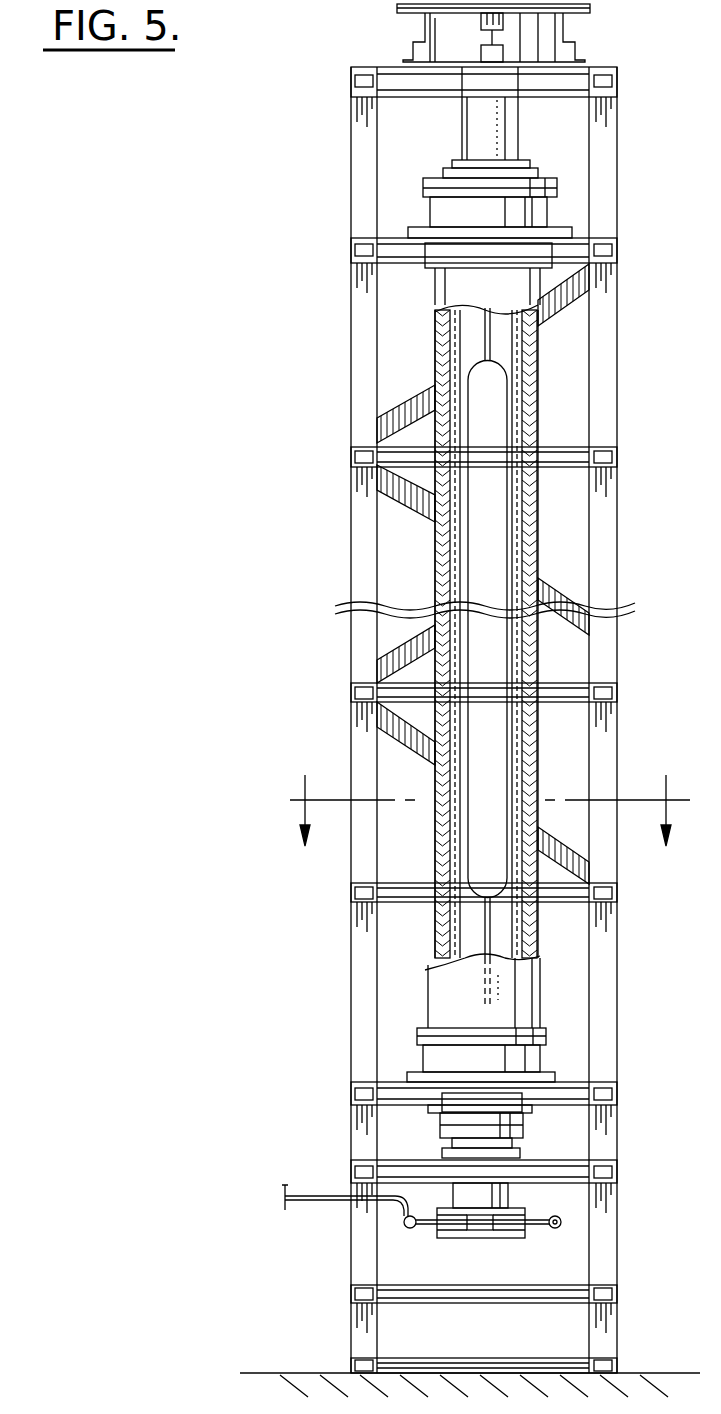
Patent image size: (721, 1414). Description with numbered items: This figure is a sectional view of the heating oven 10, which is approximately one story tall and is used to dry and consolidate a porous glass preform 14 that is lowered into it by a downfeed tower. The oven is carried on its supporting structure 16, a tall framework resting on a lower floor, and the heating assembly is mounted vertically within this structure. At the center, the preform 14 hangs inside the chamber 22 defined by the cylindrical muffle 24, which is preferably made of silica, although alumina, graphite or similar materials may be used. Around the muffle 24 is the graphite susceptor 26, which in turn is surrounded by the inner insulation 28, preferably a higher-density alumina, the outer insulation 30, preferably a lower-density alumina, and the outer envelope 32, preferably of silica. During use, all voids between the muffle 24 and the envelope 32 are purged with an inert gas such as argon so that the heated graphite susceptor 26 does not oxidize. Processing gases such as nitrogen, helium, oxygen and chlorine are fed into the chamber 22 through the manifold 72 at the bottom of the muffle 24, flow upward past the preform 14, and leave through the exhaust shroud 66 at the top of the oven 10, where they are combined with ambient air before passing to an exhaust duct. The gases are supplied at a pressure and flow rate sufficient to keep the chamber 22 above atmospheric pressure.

The heating oven 10 is at (290, 466).
The porous glass preform 14 is at (485, 524).
The supporting structure 16 is at (606, 1037).
The chamber 22 is at (496, 933).
The muffle 24 is at (465, 958).
The susceptor 26 is at (518, 725).
The inner insulation 28 is at (520, 660).
The outer insulation 30 is at (530, 636).
The outer envelope 32 is at (540, 390).
The exhaust shroud 66 is at (535, 35).
The manifold 72 is at (553, 1229).